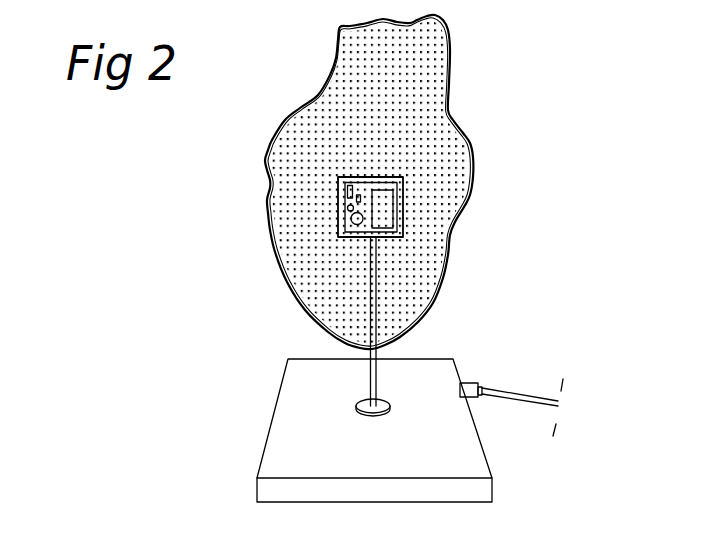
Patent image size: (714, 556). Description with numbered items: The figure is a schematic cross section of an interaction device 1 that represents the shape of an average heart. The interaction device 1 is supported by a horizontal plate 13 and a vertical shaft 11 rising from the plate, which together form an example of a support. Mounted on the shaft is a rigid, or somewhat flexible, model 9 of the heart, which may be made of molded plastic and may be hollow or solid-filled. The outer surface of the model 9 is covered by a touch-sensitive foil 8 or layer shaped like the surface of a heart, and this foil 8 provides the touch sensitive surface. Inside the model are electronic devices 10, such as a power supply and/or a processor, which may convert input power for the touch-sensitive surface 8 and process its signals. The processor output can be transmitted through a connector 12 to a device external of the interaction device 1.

The interaction device 1 is at (417, 182).
The touch-sensitive foil 8 is at (457, 91).
The model 9 is at (440, 226).
The electronic devices 10 is at (346, 206).
The vertical shaft 11 is at (369, 381).
The connector 12 is at (467, 384).
The horizontal plate 13 is at (456, 446).